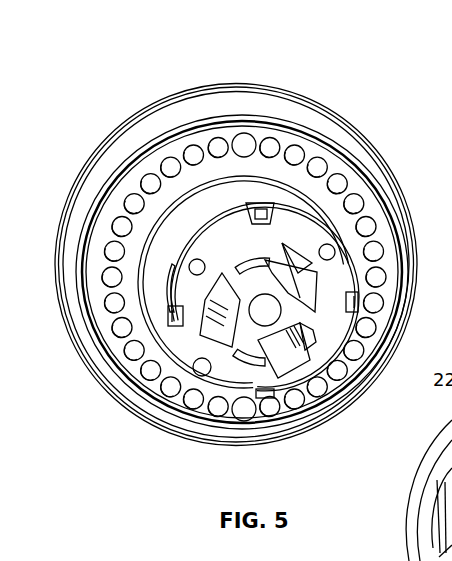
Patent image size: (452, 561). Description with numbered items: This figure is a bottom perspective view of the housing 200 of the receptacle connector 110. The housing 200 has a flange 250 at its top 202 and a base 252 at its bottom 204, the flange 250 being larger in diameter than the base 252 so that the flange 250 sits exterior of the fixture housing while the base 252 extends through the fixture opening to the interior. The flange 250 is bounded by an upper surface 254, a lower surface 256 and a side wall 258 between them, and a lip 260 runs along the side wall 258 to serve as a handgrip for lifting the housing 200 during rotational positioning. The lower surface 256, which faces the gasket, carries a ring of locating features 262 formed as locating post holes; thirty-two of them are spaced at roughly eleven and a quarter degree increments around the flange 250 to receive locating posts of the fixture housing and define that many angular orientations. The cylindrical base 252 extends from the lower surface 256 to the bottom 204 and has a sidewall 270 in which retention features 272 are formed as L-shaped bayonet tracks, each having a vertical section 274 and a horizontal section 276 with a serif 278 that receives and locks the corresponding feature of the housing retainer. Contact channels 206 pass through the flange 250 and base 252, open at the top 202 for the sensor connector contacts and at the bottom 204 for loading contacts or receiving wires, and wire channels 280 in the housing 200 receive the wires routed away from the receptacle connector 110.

The receptacle connector 110 is at (302, 52).
The housing 200 is at (153, 127).
The top 202 is at (90, 153).
The bottom 204 is at (246, 392).
The contact channels 206 is at (290, 362).
The flange 250 is at (316, 120).
The base 252 is at (322, 210).
The upper surface 254 is at (207, 83).
The lower surface 256 is at (261, 204).
The side wall 258 is at (193, 110).
The lip 260 is at (122, 137).
The locating features 262 is at (115, 348).
The sidewall 270 is at (173, 248).
The retention features 272 is at (167, 326).
The vertical section 274 is at (278, 200).
The horizontal section 276 is at (295, 205).
The serif 278 is at (311, 217).
The wire channels 280 is at (337, 352).